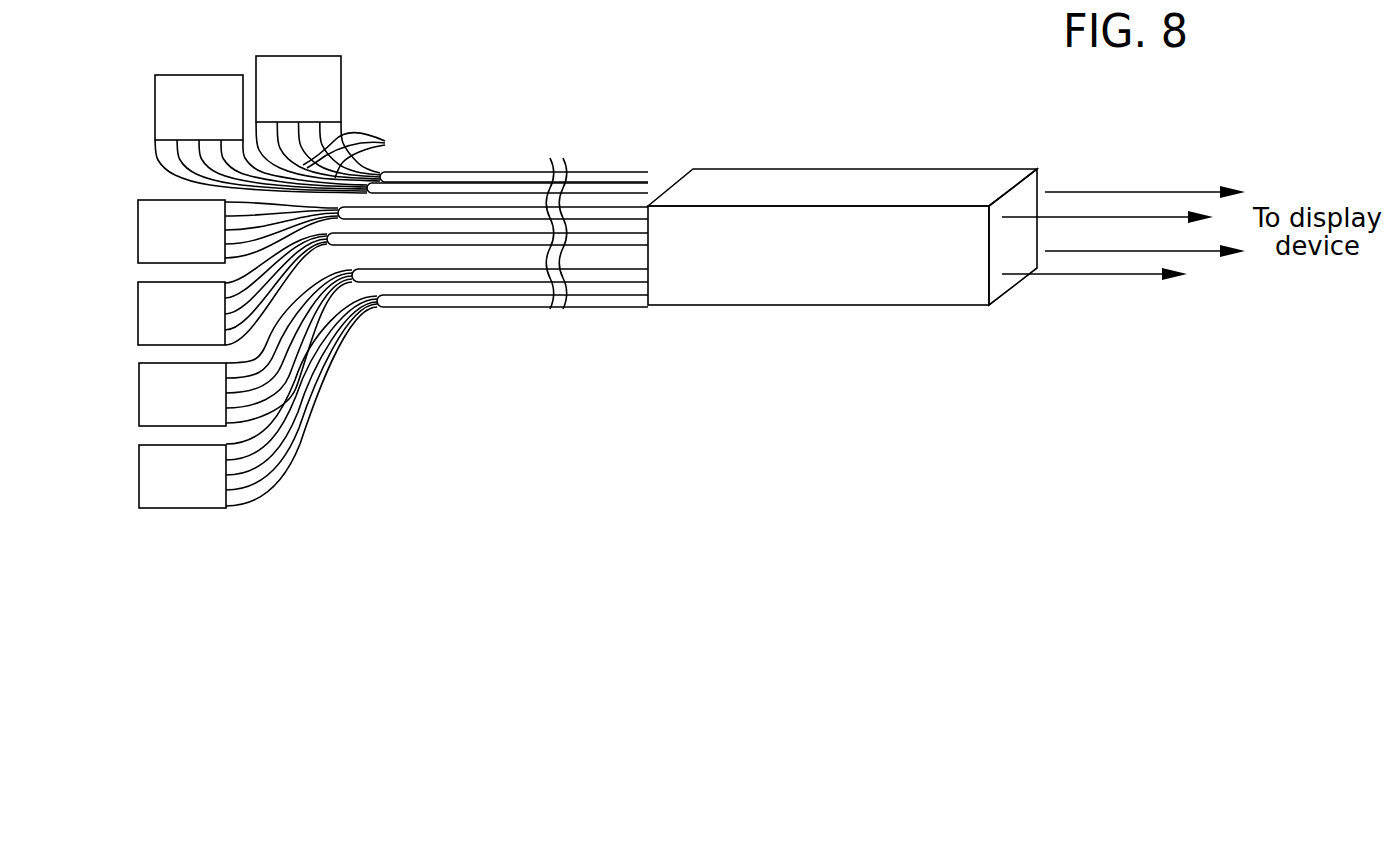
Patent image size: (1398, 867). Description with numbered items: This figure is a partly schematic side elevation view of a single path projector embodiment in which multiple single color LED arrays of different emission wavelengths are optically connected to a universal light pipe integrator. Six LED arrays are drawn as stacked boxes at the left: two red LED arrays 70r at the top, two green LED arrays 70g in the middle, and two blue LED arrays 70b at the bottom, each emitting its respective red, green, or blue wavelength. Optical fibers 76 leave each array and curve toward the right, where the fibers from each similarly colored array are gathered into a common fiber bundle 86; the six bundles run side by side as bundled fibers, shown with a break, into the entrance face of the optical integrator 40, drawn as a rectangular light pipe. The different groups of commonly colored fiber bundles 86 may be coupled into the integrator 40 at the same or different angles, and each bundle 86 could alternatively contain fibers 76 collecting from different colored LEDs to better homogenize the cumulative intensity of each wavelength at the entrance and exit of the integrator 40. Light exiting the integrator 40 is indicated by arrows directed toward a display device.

The red LED array 70r is at (155, 107).
The green LED array 70g is at (138, 235).
The blue LED array 70b is at (139, 393).
The optical fibers 76 is at (317, 487).
The fiber bundle 86 is at (592, 144).
The optical integrator 40 is at (818, 183).